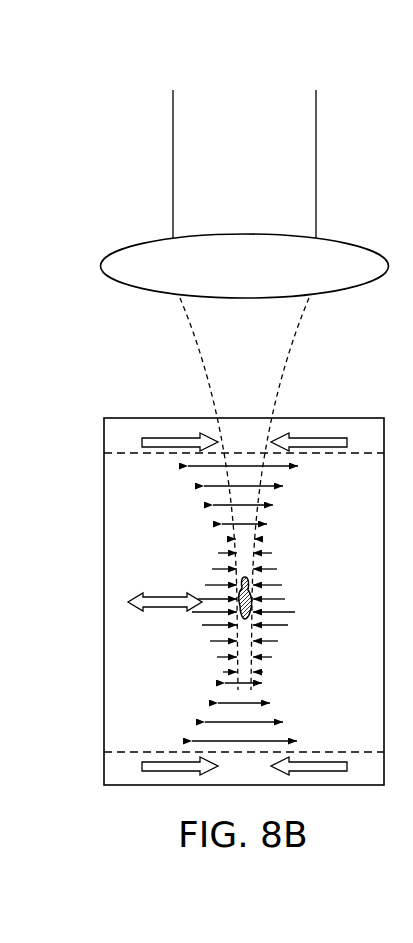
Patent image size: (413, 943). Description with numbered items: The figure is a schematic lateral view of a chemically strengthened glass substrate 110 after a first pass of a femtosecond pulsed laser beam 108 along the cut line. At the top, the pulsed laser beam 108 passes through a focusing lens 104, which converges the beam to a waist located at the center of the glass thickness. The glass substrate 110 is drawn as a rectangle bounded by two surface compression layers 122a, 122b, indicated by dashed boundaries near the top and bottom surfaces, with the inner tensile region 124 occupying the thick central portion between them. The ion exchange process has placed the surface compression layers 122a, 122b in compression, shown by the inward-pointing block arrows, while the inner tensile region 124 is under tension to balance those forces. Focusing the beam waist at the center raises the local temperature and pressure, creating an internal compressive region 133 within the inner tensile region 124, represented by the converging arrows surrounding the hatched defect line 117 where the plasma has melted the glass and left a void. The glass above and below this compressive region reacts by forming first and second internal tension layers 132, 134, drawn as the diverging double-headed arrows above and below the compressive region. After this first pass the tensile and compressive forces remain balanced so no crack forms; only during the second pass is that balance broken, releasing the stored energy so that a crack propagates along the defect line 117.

The pulsed laser beam 108 is at (172, 142).
The focusing lens 104 is at (138, 243).
The glass substrate 110 is at (211, 437).
The surface compression layer 122a is at (104, 437).
The surface compression layer 122b is at (104, 765).
The inner tensile region 124 is at (104, 582).
The first internal tension layer 132 is at (216, 517).
The internal compressive region 133 is at (252, 596).
The defect line 117 is at (251, 603).
The second internal tension layer 134 is at (283, 694).